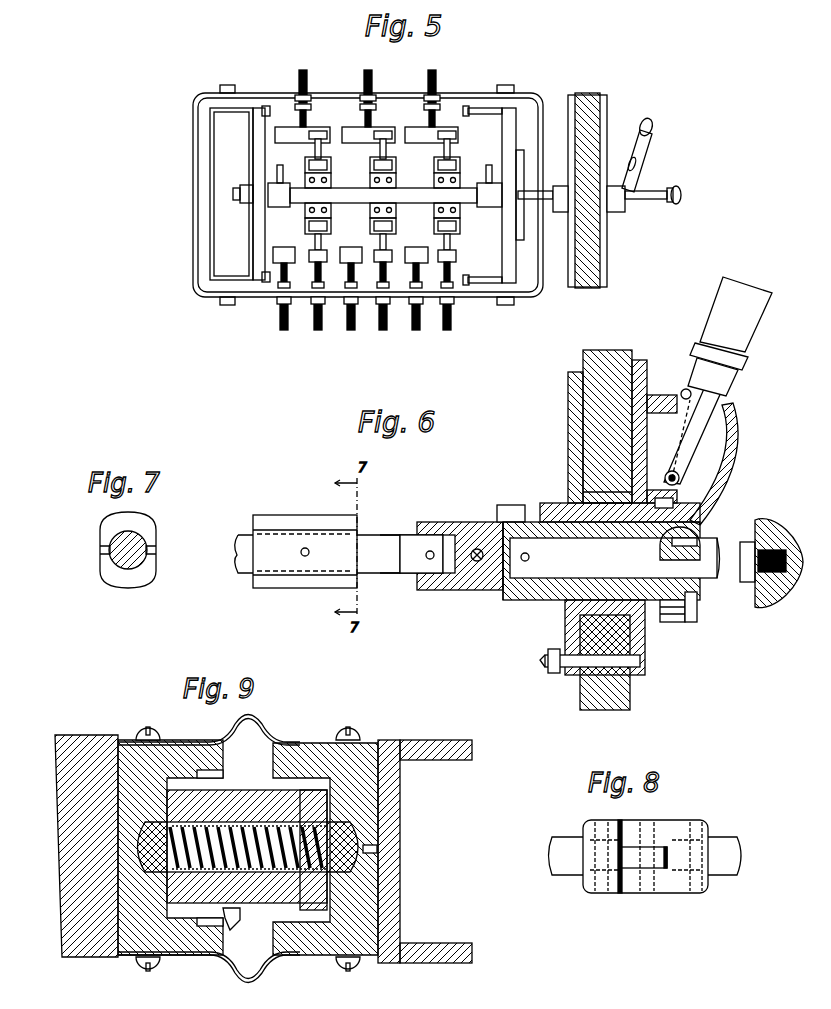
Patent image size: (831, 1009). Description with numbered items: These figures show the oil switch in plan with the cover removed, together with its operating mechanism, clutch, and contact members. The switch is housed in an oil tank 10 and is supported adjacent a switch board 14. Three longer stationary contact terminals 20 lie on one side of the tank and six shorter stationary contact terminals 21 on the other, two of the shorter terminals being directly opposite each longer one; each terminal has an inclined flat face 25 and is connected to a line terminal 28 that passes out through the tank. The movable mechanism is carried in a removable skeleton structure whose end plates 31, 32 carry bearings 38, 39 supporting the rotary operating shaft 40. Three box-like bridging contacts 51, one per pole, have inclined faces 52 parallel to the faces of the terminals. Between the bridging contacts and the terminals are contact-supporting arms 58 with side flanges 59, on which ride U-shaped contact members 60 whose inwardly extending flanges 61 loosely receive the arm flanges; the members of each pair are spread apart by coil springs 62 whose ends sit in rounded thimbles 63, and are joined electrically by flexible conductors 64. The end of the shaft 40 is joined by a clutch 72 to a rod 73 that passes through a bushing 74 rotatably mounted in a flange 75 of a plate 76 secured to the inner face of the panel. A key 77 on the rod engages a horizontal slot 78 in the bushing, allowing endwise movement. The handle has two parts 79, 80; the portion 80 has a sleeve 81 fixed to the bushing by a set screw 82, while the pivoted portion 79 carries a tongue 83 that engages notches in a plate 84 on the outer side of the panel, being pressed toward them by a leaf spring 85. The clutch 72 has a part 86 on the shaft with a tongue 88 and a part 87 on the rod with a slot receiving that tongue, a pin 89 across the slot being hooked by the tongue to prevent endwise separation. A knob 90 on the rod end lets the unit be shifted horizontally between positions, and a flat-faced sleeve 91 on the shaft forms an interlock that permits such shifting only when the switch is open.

In FIG. 5, the oil tank 10 is at (474, 103).
In FIG. 5, the switch board 14 is at (592, 95).
In FIG. 6, the switch board 14 is at (606, 705).
In FIG. 5, the stationary contact terminals 20 is at (292, 131).
In FIG. 9, the stationary contact terminals 20 is at (87, 742).
In FIG. 5, the stationary contact terminals 21 is at (284, 248).
In FIG. 9, the inclined flat face 25 is at (118, 836).
In FIG. 5, the line terminals 28 is at (432, 70).
In FIG. 5, the end plate 31 is at (252, 150).
In FIG. 5, the end plate 32 is at (502, 140).
In FIG. 5, the bearing 38 is at (258, 190).
In FIG. 5, the bearing 39 is at (508, 192).
In FIG. 5, the operating shaft 40 is at (467, 200).
In FIG. 6, the operating shaft 40 is at (242, 573).
In FIG. 7, the operating shaft 40 is at (118, 566).
In FIG. 8, the operating shaft 40 is at (566, 840).
In FIG. 5, the bridging contacts 51 is at (396, 178).
In FIG. 9, the bridging contacts 51 is at (400, 832).
In FIG. 9, the inclined faces 52 is at (400, 797).
In FIG. 9, the contact-supporting arms 58 is at (258, 903).
In FIG. 9, the flanges 59 is at (312, 790).
In FIG. 9, the contact members 60 is at (200, 745).
In FIG. 9, the inwardly extending flanges 61 is at (233, 930).
In FIG. 9, the coil springs 62 is at (245, 828).
In FIG. 9, the sockets or thimbles 63 is at (372, 853).
In FIG. 9, the flexible conductors 64 is at (253, 985).
In FIG. 6, the clutch 72 is at (482, 524).
In FIG. 8, the clutch 72 is at (698, 822).
In FIG. 5, the rod 73 is at (645, 200).
In FIG. 6, the rod 73 is at (710, 578).
In FIG. 8, the rod 73 is at (722, 843).
In FIG. 6, the bushing 74 is at (545, 585).
In FIG. 6, the flange 75 is at (570, 492).
In FIG. 6, the plate 76 is at (568, 400).
In FIG. 6, the key 77 is at (702, 546).
In FIG. 6, the horizontal slot 78 is at (700, 542).
In FIG. 5, the handle portion 79 is at (648, 140).
In FIG. 6, the handle portion 79 is at (758, 300).
In FIG. 6, the handle portion 80 is at (700, 472).
In FIG. 6, the sleeve 81 is at (692, 614).
In FIG. 6, the set screw 82 is at (668, 622).
In FIG. 6, the tongue 83 is at (683, 390).
In FIG. 6, the plate 84 is at (648, 362).
In FIG. 6, the leaf spring 85 is at (727, 420).
In FIG. 6, the clutch part 86 is at (440, 585).
In FIG. 8, the clutch part 86 is at (608, 887).
In FIG. 6, the clutch part 87 is at (503, 600).
In FIG. 8, the clutch part 87 is at (692, 887).
In FIG. 6, the tongue 88 is at (494, 522).
In FIG. 8, the tongue 88 is at (660, 868).
In FIG. 6, the pin 89 is at (476, 566).
In FIG. 8, the pin 89 is at (645, 830).
In FIG. 6, the knob 90 is at (787, 605).
In FIG. 6, the sleeve 91 is at (295, 522).
In FIG. 7, the sleeve 91 is at (150, 522).